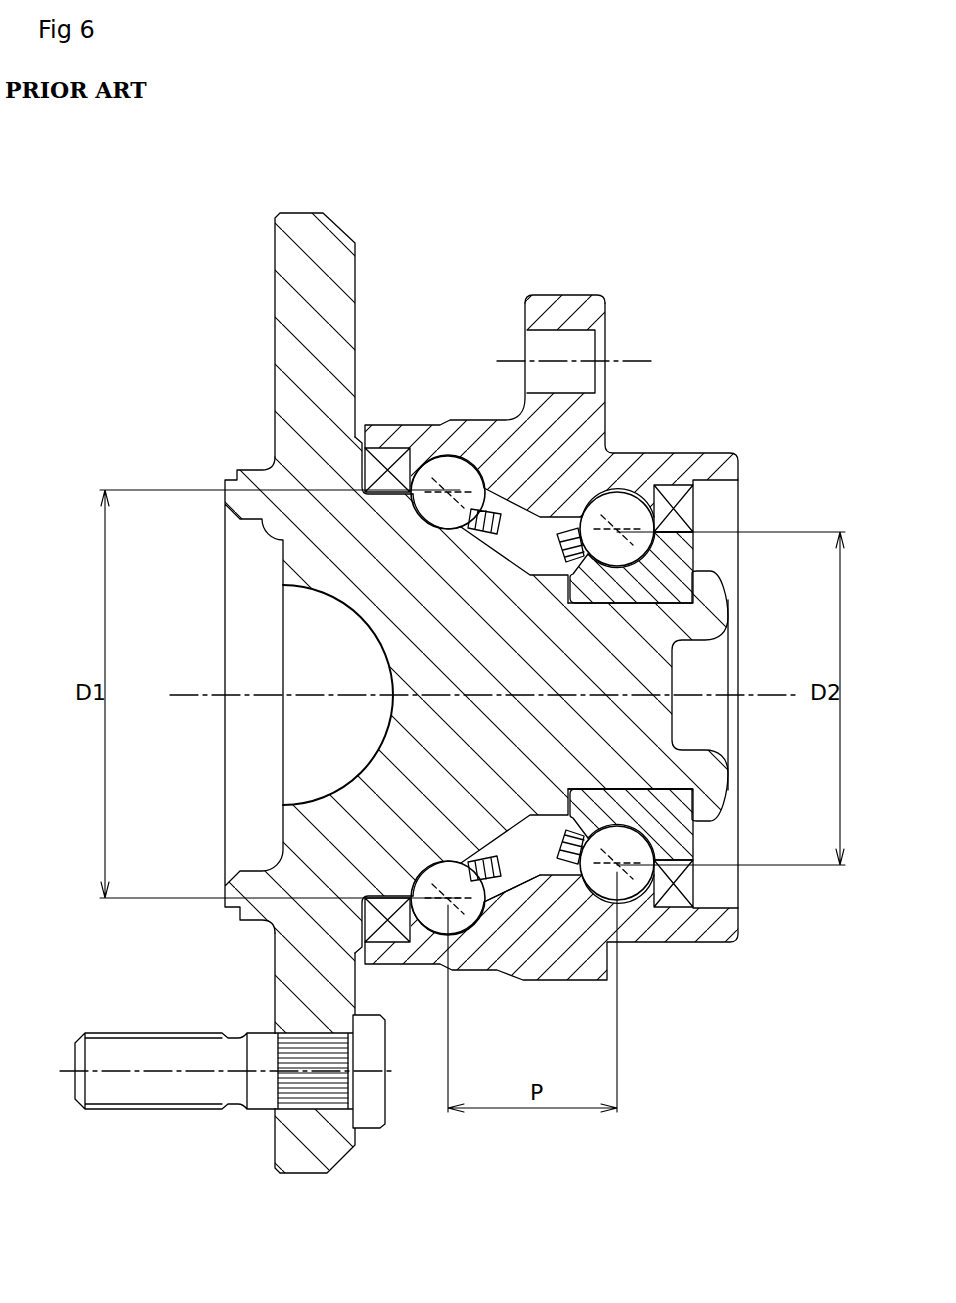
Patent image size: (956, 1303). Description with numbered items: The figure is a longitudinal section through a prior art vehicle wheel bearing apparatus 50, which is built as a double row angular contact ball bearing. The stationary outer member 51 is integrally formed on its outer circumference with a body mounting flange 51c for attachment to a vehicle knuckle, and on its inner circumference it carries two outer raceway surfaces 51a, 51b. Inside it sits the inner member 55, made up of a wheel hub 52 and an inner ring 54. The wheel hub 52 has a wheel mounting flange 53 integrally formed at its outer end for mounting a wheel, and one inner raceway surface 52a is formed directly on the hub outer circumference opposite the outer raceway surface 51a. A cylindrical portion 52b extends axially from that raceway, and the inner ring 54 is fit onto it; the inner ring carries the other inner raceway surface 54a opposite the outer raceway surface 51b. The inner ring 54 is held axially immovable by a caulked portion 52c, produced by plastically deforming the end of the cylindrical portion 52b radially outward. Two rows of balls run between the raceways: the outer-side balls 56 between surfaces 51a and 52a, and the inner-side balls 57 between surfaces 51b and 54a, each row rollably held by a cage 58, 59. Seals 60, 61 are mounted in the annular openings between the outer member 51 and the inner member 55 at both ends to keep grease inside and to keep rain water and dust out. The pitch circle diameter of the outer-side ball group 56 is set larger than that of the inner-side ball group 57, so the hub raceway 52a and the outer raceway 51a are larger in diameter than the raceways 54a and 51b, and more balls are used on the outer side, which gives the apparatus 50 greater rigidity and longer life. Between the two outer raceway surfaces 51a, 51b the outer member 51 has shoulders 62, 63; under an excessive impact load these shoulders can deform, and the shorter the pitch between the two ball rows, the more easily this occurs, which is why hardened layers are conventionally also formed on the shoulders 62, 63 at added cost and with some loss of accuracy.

The vehicle wheel bearing apparatus 50 is at (675, 272).
The outer member 51 is at (552, 623).
The outer raceway surface 51a is at (433, 475).
The outer raceway surface 51b is at (618, 528).
The body mounting flange 51c is at (550, 300).
The wheel hub 52 is at (443, 695).
The inner raceway surface 52a is at (440, 480).
The cylindrical portion 52b is at (610, 590).
The caulked portion 52c is at (710, 599).
The wheel mounting flange 53 is at (311, 240).
The inner ring 54 is at (685, 681).
The inner raceway surface 54a is at (625, 532).
The inner member 55 is at (348, 595).
The outer-side balls 56 is at (452, 905).
The inner-side balls 57 is at (620, 892).
The cage 58 is at (485, 855).
The cage 59 is at (565, 827).
The seal 60 is at (367, 943).
The seal 61 is at (688, 883).
The shoulder 62 is at (462, 873).
The shoulder 63 is at (547, 868).